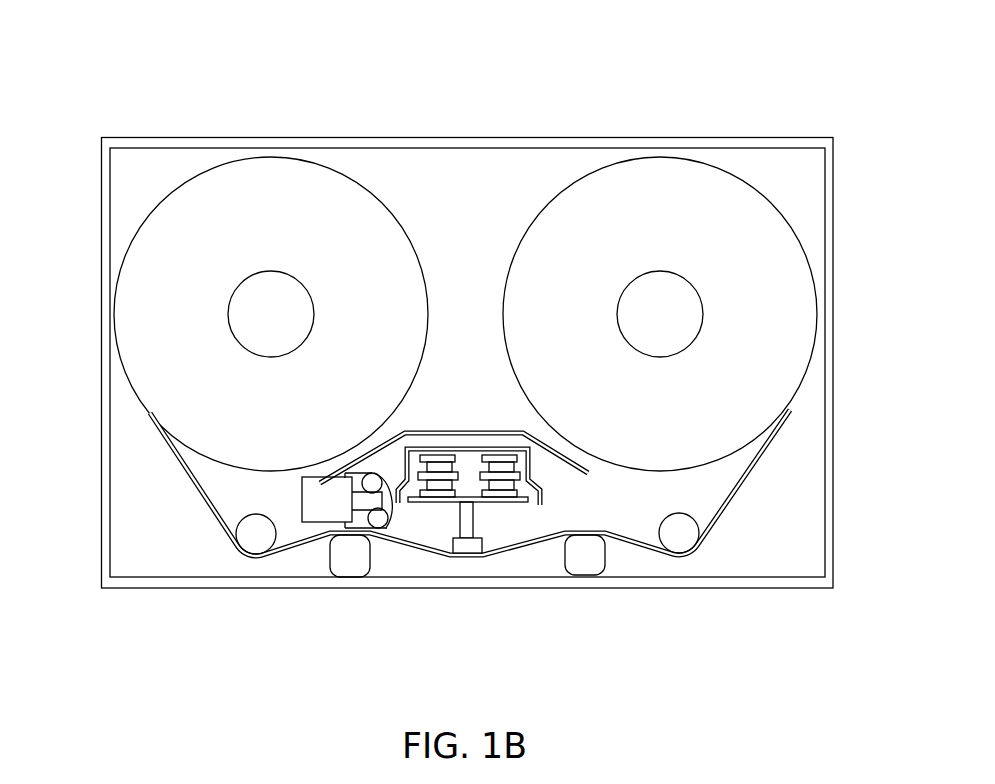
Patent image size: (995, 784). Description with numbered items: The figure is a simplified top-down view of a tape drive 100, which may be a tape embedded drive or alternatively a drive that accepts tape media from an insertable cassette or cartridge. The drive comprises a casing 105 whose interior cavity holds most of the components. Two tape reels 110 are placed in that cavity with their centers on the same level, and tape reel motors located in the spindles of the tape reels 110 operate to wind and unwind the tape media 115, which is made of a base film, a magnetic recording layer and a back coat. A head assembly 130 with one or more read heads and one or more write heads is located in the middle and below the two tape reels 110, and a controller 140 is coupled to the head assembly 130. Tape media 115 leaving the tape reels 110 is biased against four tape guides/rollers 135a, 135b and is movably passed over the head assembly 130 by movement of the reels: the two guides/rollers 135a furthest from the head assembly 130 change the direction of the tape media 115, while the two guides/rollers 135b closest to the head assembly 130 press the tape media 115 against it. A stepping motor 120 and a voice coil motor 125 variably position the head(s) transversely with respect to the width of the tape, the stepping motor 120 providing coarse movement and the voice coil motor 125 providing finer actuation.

The tape drive 100 is at (97, 66).
The casing 105 is at (502, 138).
The tape reels 110 is at (258, 157).
The tape media 115 is at (203, 495).
The stepping motor 120 is at (310, 523).
The voice coil motor 125 is at (442, 502).
The head assembly 130 is at (466, 553).
The tape guides/rollers 135a is at (255, 534).
The tape guides/rollers 135b is at (351, 560).
The controller 140 is at (303, 282).